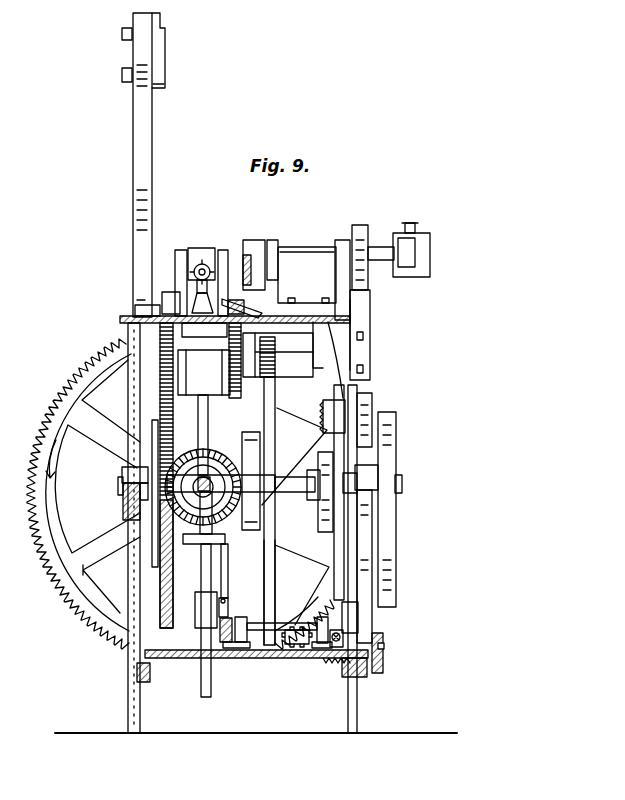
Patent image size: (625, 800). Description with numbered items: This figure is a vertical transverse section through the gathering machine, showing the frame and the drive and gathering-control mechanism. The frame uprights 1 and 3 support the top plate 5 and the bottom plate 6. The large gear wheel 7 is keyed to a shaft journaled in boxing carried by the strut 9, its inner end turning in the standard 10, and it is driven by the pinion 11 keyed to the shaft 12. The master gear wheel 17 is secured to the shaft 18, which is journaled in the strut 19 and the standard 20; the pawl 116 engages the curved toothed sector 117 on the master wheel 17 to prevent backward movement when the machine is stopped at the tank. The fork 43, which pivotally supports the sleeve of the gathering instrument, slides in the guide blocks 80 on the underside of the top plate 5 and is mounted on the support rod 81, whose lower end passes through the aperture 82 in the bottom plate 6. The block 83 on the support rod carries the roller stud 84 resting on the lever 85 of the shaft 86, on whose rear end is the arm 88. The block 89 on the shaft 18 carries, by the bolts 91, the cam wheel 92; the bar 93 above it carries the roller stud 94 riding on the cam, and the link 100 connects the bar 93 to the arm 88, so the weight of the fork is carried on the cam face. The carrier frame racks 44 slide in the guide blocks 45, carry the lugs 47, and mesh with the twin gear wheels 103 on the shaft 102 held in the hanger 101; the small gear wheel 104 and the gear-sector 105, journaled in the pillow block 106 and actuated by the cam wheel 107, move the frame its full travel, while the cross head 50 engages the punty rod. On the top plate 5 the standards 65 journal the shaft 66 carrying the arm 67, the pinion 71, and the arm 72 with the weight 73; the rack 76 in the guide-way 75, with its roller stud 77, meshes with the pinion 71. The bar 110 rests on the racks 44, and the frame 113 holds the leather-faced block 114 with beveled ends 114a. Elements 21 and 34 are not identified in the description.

The upright 1 is at (128, 703).
The upright 3 is at (349, 694).
The top plate 5 is at (122, 316).
The bottom plate 6 is at (163, 658).
The gear wheel 7 is at (50, 417).
The strut 9 is at (228, 578).
The standard 10 is at (213, 557).
The pinion 11 is at (333, 667).
The shaft 12 is at (383, 637).
The master gear wheel 17 is at (160, 598).
The shaft 18 is at (402, 482).
The strut 19 is at (124, 499).
The standard 20 is at (370, 543).
The bevel gear 21 is at (194, 452).
The foot 34 is at (188, 523).
The fork 43 is at (170, 285).
The racks 44 is at (179, 282).
The guide blocks 45 is at (140, 310).
The lugs 47 is at (224, 248).
The cross head 50 is at (199, 257).
The standards 65 is at (273, 240).
The shaft 66 is at (322, 250).
The arm 67 is at (253, 240).
The pinion 71 is at (368, 232).
The arm 72 is at (407, 268).
The weight 73 is at (430, 247).
The guide-way 75 is at (363, 350).
The rack 76 is at (362, 265).
The roller stud 77 is at (395, 443).
The guide blocks 80 is at (204, 338).
The support rod 81 is at (208, 440).
The aperture 82 is at (203, 668).
The block 83 is at (207, 610).
The roller stud 84 is at (228, 603).
The lever 85 is at (224, 658).
The shaft 86 is at (302, 627).
The arm 88 is at (358, 618).
The block 89 is at (305, 493).
The bolts 91 is at (320, 460).
The cam wheel 92 is at (310, 472).
The bar 93 is at (342, 405).
The roller stud 94 is at (258, 440).
The link 100 is at (345, 585).
The hanger 101 is at (322, 343).
The shaft 102 is at (278, 355).
The twin gear wheels 103 is at (204, 372).
The small gear wheel 104 is at (307, 275).
The gear-sector 105 is at (275, 392).
The pillow block 106 is at (267, 647).
The cam wheel 107 is at (275, 548).
The bar 110 is at (250, 300).
The frame 113 is at (152, 147).
The block 114 is at (165, 59).
The ends 114a is at (166, 84).
The pawl 116 is at (150, 357).
The curved toothed sector 117 is at (155, 445).